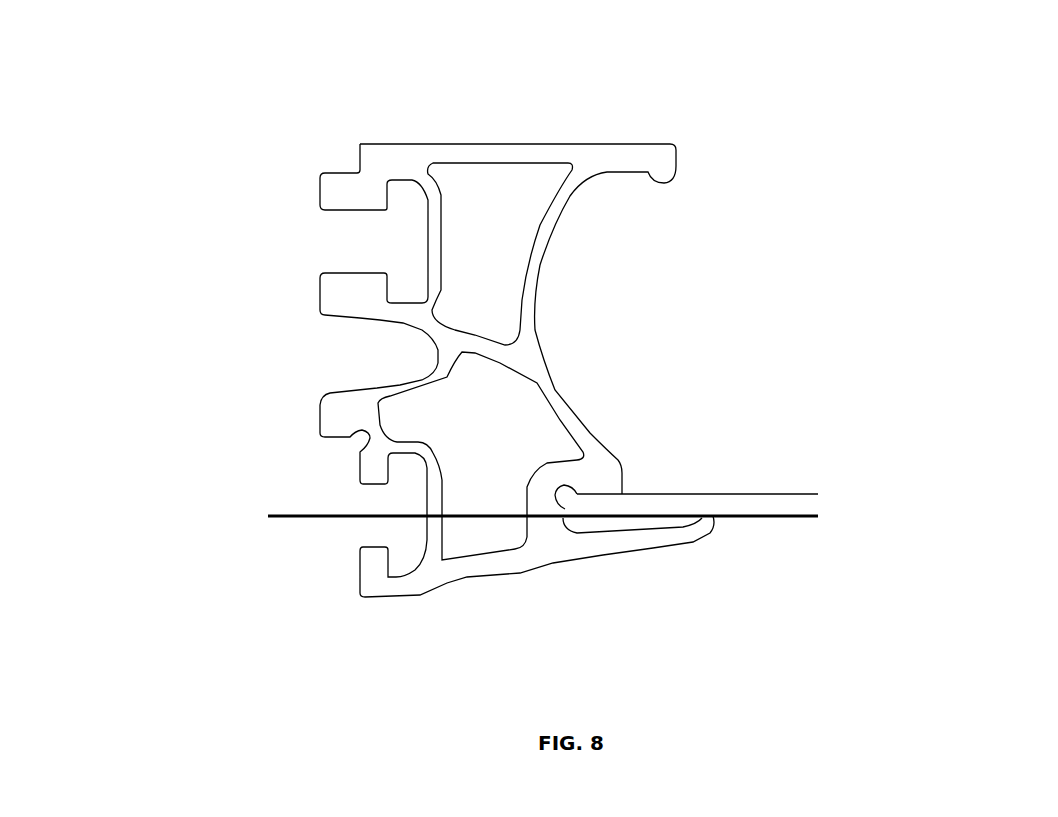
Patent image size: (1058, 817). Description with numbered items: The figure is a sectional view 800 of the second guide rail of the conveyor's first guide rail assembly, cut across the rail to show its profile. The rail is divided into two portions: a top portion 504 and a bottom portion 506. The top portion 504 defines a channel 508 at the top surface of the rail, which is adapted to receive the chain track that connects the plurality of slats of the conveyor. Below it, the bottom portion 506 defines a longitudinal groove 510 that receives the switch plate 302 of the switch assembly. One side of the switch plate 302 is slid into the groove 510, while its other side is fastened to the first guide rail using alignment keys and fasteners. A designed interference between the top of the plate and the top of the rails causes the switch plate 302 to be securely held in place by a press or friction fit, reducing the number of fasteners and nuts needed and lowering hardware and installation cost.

The sectional view 800 is at (88, 62).
The switch plate 302 is at (752, 495).
The top portion 504 is at (300, 145).
The bottom portion 506 is at (300, 440).
The channel 508 is at (676, 163).
The longitudinal groove 510 is at (597, 525).